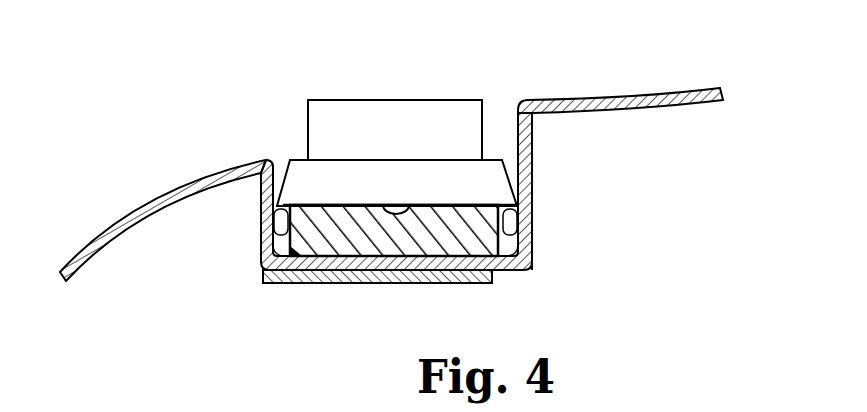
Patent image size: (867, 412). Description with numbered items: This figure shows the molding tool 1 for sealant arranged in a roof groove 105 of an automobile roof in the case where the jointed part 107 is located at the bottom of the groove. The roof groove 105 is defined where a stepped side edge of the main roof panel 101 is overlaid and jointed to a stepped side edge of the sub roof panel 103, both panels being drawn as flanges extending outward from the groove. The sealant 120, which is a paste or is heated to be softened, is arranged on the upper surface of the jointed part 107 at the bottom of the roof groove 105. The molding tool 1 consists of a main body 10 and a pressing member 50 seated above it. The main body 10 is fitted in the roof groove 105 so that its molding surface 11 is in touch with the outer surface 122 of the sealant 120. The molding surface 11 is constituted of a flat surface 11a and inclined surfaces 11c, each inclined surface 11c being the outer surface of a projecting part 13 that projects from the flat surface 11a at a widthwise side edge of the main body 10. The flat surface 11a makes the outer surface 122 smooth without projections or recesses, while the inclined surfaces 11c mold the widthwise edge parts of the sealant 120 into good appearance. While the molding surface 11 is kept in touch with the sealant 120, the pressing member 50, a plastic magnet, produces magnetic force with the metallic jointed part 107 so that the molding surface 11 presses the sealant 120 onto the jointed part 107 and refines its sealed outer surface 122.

The molding tool 1 is at (366, 79).
The main body 10 is at (488, 178).
The molding surface 11 is at (349, 206).
The flat surface 11a is at (405, 213).
The inclined surface 11c is at (266, 246).
The projecting part 13 is at (268, 213).
The pressing member 50 is at (454, 115).
The main roof panel 101 is at (674, 100).
The sub roof panel 103 is at (150, 212).
The roof groove 105 is at (497, 125).
The jointed part 107 is at (400, 271).
The sealant 120 is at (458, 252).
The outer surface 122 is at (313, 205).